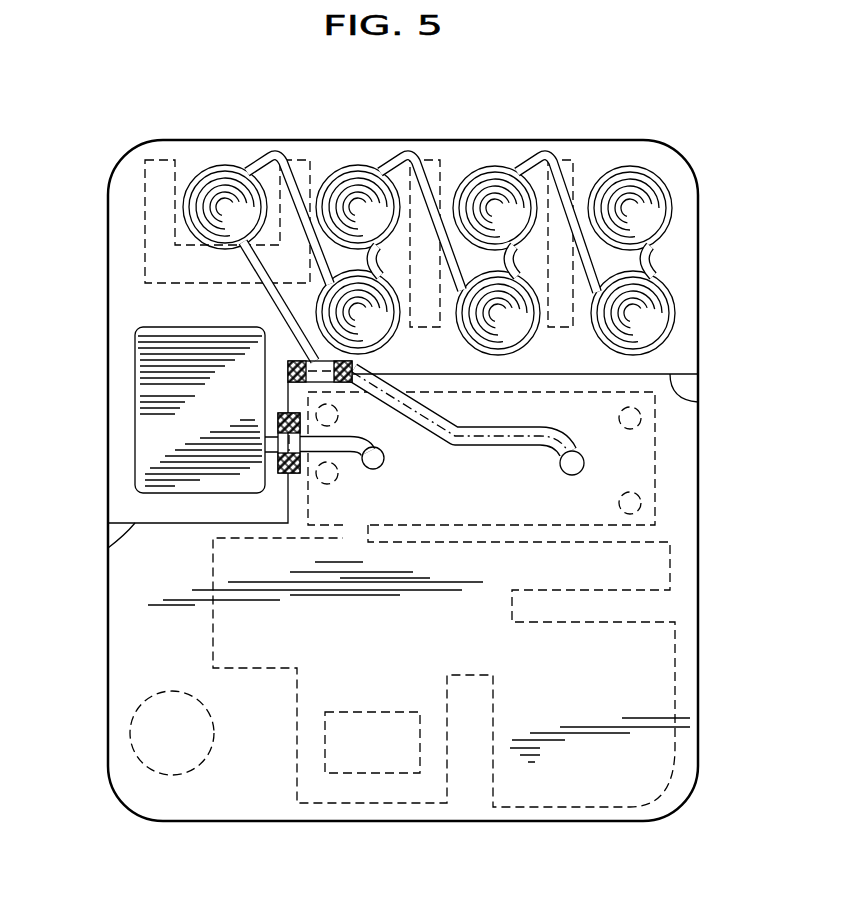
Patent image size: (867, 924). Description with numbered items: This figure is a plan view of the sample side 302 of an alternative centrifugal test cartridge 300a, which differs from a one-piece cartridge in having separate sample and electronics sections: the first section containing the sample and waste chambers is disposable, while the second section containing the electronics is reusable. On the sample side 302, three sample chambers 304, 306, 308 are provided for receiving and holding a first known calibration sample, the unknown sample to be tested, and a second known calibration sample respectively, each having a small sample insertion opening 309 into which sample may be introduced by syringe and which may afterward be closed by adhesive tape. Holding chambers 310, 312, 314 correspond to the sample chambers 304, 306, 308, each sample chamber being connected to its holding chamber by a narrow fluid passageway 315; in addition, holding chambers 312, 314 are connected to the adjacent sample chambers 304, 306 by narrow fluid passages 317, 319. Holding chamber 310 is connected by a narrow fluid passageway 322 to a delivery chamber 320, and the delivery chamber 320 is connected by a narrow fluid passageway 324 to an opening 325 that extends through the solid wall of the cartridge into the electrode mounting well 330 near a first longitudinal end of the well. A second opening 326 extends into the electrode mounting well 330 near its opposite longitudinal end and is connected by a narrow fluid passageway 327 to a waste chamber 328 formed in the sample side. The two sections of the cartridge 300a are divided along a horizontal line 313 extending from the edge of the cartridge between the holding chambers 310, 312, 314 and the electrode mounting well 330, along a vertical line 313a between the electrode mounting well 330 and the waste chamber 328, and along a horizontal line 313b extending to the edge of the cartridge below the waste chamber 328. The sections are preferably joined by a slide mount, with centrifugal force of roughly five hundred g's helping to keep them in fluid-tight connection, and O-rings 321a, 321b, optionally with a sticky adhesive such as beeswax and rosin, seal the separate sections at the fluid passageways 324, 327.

The cartridge 300a is at (674, 134).
The sample side 302 is at (690, 470).
The sample chamber 304 is at (352, 165).
The sample chamber 306 is at (494, 165).
The sample chamber 308 is at (618, 165).
The sample insertion opening 309 is at (759, 187).
The holding chamber 310 is at (393, 341).
The holding chamber 312 is at (533, 341).
The horizontal line 313 is at (698, 402).
The vertical line 313a is at (288, 395).
The horizontal line 313b is at (108, 548).
The holding chamber 314 is at (673, 322).
The fluid passageway 315 is at (660, 262).
The fluid passage 317 is at (550, 157).
The fluid passage 319 is at (412, 158).
The delivery chamber 320 is at (214, 167).
The O-ring 321a is at (353, 374).
The O-ring 321b is at (300, 477).
The fluid passageway 322 is at (282, 150).
The fluid passageway 324 is at (272, 300).
The opening 325 is at (570, 465).
The second opening 326 is at (380, 464).
The fluid passageway 327 is at (273, 450).
The waste chamber 328 is at (153, 410).
The electrode mounting well 330 is at (608, 517).